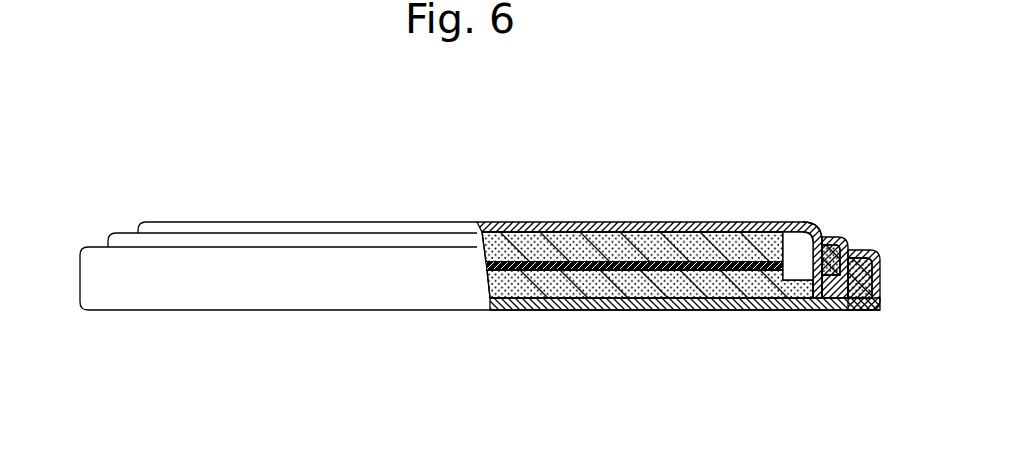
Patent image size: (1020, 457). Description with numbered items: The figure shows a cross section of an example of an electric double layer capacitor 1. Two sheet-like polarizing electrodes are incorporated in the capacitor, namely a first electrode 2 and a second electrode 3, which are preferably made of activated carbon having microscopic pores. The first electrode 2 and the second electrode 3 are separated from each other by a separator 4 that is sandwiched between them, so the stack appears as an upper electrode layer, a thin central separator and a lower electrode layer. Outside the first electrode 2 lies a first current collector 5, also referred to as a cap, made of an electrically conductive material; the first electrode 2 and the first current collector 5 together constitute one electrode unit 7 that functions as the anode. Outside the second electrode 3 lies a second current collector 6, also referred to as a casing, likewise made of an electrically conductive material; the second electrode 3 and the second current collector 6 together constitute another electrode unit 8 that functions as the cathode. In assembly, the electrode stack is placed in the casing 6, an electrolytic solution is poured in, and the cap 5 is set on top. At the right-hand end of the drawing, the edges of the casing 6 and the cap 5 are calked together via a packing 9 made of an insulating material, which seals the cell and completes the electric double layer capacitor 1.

The electric double layer capacitor 1 is at (518, 210).
The first electrode 2 is at (647, 222).
The second electrode 3 is at (633, 277).
The separator 4 is at (550, 270).
The first current collector 5 is at (574, 222).
The second current collector 6 is at (693, 310).
The electrode unit 7 is at (560, 113).
The electrode unit 8 is at (607, 385).
The packing 9 is at (853, 308).